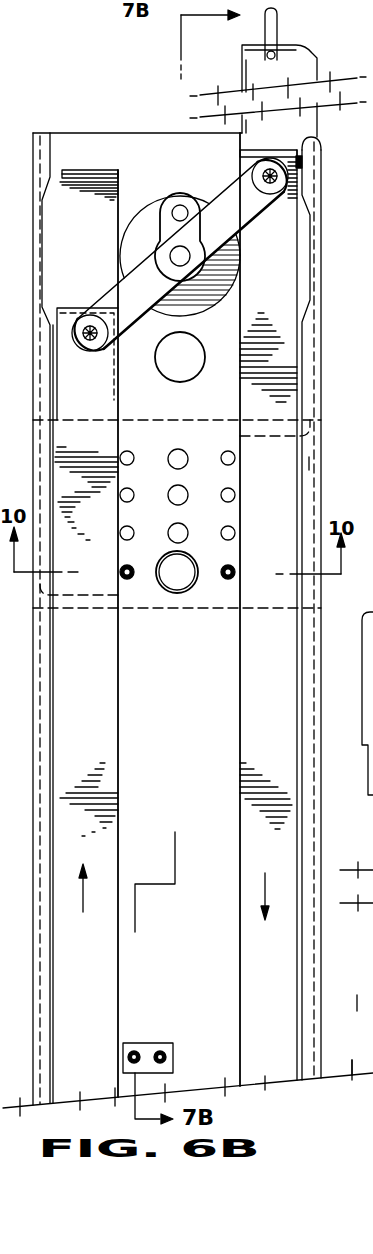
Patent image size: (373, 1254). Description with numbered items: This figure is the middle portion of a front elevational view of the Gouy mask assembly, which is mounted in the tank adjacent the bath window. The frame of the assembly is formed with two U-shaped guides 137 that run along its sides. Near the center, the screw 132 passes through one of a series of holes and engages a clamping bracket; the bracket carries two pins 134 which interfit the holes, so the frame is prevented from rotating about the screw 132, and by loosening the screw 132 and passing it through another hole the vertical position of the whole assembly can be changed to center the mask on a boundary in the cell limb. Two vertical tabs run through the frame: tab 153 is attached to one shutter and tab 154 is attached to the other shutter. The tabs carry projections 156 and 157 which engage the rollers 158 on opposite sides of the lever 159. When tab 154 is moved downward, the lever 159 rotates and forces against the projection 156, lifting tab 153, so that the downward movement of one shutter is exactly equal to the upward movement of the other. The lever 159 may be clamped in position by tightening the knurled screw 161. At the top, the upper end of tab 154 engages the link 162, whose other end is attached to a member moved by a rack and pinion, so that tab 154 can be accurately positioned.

The screw 132 is at (177, 594).
The pins 134 is at (127, 582).
The U-shaped guides 137 is at (309, 457).
The tab 153 is at (97, 740).
The tab 154 is at (299, 63).
The projection 156 is at (62, 312).
The projection 157 is at (300, 163).
The rollers 158 is at (268, 196).
The lever 159 is at (122, 272).
The knurled screw 161 is at (192, 267).
The link 162 is at (278, 28).